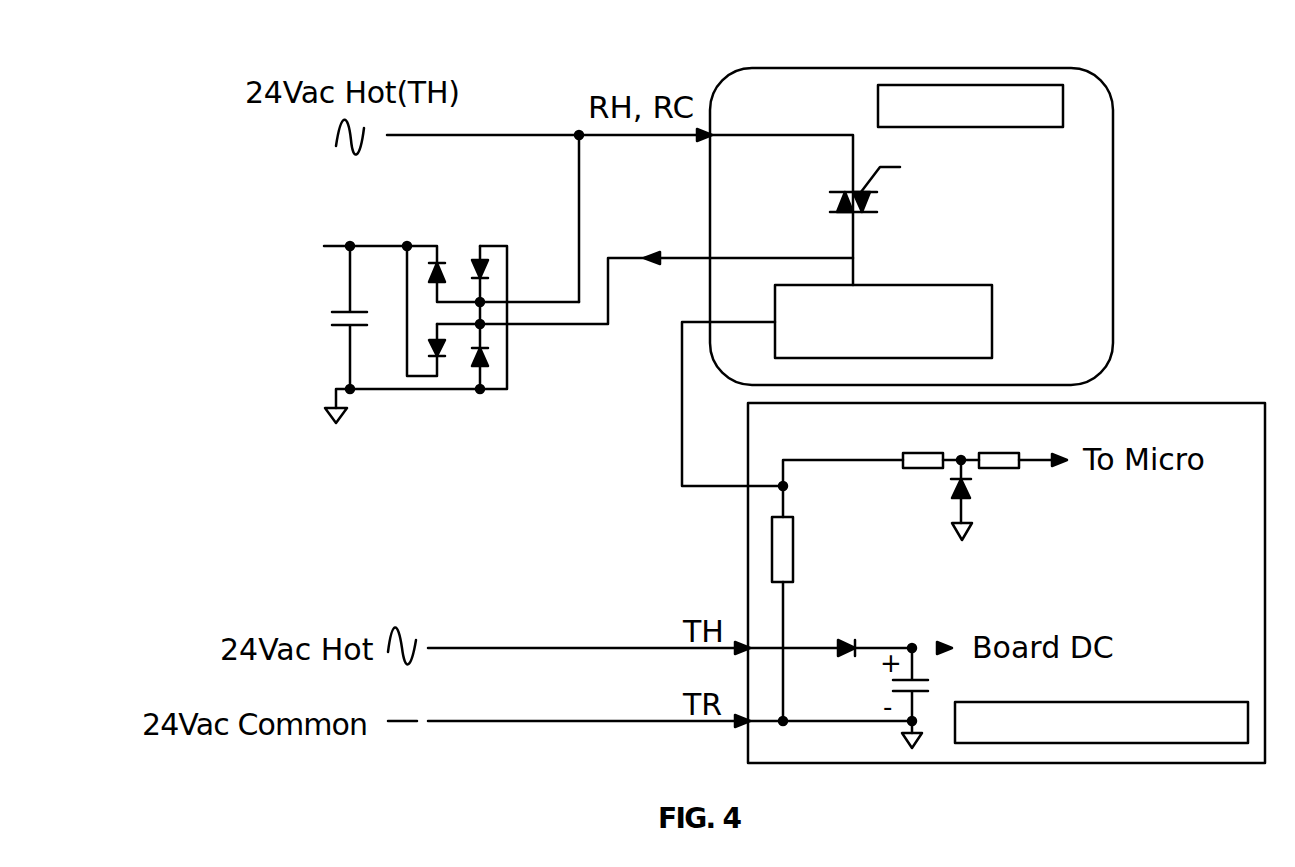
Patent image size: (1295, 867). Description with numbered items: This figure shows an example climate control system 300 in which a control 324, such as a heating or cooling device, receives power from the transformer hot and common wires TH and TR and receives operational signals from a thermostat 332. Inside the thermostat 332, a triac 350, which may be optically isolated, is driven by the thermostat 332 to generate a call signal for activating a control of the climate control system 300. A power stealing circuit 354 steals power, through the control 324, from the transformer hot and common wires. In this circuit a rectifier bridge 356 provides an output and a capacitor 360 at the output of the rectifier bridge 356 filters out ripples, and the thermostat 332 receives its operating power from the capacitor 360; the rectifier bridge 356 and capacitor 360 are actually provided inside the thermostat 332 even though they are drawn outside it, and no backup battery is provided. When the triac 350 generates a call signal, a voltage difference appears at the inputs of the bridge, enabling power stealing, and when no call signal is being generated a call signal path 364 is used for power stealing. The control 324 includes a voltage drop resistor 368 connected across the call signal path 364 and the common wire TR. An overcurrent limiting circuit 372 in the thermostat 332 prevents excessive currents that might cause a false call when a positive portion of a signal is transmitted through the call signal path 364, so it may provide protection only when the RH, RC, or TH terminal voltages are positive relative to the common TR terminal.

The climate control system 300 is at (380, 786).
The control 324 is at (1200, 763).
The thermostat 332 is at (782, 68).
The triac 350 is at (870, 214).
The power stealing circuit 354 is at (400, 463).
The rectifier bridge 356 is at (446, 232).
The capacitor 360 is at (312, 312).
The call signal path 364 is at (682, 404).
The voltage drop resistor 368 is at (772, 550).
The overcurrent limiting circuit 372 is at (922, 285).